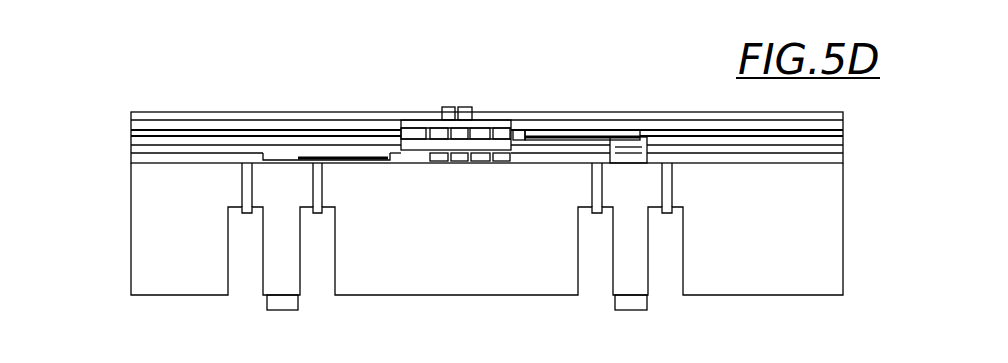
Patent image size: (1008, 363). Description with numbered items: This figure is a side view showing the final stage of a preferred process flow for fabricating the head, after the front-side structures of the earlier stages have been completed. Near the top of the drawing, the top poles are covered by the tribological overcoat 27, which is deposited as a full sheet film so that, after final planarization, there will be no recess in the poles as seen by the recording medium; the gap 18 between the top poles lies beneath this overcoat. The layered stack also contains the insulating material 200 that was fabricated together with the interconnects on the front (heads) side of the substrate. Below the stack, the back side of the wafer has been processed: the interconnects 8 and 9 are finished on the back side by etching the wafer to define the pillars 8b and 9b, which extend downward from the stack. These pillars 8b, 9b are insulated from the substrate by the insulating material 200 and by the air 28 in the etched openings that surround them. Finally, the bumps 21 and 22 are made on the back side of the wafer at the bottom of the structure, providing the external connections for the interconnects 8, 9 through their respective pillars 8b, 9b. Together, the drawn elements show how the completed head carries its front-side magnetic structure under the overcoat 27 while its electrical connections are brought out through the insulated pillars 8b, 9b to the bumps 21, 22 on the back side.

The insulating material 200 is at (240, 180).
The tribological overcoat 27 is at (530, 113).
The gap 18 is at (457, 128).
The interconnect 8 is at (267, 188).
The interconnect 9 is at (633, 195).
The air 28 is at (313, 232).
The pillar 8b is at (273, 267).
The pillar 9b is at (628, 267).
The bump 21 is at (290, 300).
The bump 22 is at (613, 300).